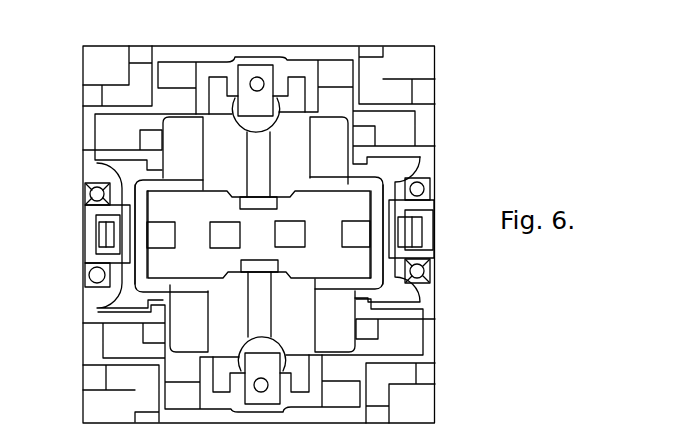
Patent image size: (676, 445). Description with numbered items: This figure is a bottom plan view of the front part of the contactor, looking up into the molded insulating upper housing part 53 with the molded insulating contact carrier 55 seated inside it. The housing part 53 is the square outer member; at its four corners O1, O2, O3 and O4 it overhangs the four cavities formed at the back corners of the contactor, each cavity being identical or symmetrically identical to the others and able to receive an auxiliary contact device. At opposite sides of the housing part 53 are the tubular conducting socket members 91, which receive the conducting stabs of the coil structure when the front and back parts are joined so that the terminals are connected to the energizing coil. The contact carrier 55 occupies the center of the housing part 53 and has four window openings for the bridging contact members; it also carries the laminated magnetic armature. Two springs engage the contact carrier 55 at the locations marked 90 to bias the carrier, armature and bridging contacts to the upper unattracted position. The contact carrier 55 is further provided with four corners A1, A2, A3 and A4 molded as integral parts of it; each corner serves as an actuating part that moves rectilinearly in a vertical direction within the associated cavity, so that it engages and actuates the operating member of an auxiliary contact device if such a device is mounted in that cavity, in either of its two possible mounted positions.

The upper housing part 53 is at (405, 135).
The insulating contact carrier 55 is at (302, 301).
The spring engagement location 90 is at (243, 119).
The tubular conducting socket members 91 is at (88, 196).
The corner O1 is at (417, 61).
The corner O2 is at (90, 64).
The corner O3 is at (418, 404).
The corner O4 is at (96, 402).
The corner A1 is at (332, 128).
The corner A2 is at (178, 127).
The corner A3 is at (344, 341).
The corner A4 is at (186, 341).